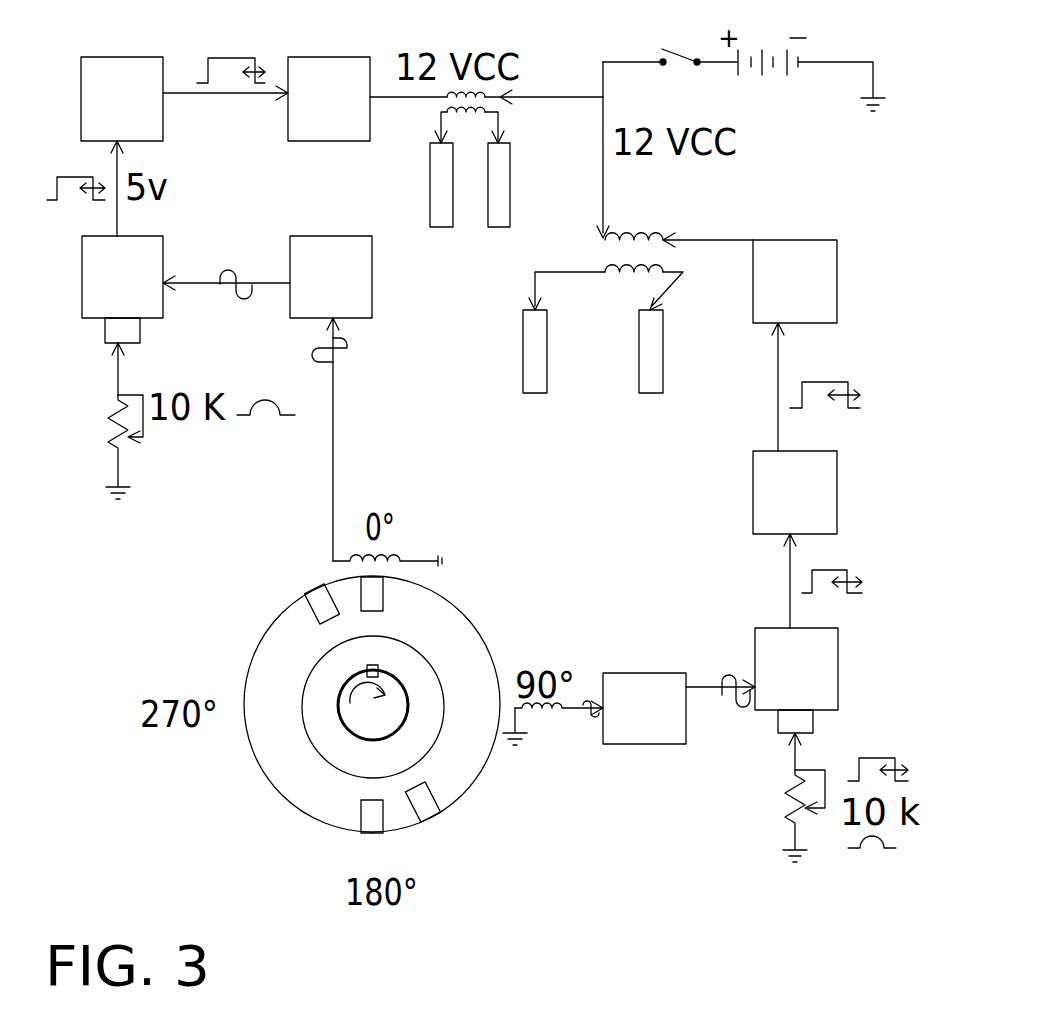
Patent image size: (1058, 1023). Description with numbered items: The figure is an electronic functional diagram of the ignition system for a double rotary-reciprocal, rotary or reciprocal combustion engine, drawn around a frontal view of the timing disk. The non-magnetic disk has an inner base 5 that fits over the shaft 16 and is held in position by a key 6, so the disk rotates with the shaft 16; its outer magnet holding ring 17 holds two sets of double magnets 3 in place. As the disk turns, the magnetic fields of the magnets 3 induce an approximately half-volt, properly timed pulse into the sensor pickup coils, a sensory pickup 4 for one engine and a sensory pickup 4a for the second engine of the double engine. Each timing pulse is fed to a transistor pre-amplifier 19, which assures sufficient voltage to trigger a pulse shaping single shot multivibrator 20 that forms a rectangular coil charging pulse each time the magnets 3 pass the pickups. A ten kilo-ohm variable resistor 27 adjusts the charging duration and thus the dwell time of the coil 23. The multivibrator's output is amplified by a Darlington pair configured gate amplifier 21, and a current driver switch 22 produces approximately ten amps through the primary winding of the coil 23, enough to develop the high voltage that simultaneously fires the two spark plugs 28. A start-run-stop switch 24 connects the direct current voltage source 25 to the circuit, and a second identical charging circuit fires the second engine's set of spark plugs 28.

The magnet 3 is at (372, 595).
The sensory pickup 4 is at (390, 552).
The sensory pickup 4a is at (540, 723).
The inner base 5 is at (337, 742).
The key 6 is at (376, 668).
The shaft 16 is at (355, 712).
The magnet holding ring 17 is at (327, 802).
The transistor pre-amplifier 19 is at (659, 700).
The pulse shaping single shot multivibrator 20 is at (112, 283).
The Darlington pair configured gate amplifier 21 is at (131, 106).
The current driver switch 22 is at (342, 118).
The coil 23 is at (485, 105).
The start-run-stop switch 24 is at (677, 66).
The direct current voltage source 25 is at (753, 84).
The variable resistor 27 is at (105, 418).
The spark plug 28 is at (438, 182).